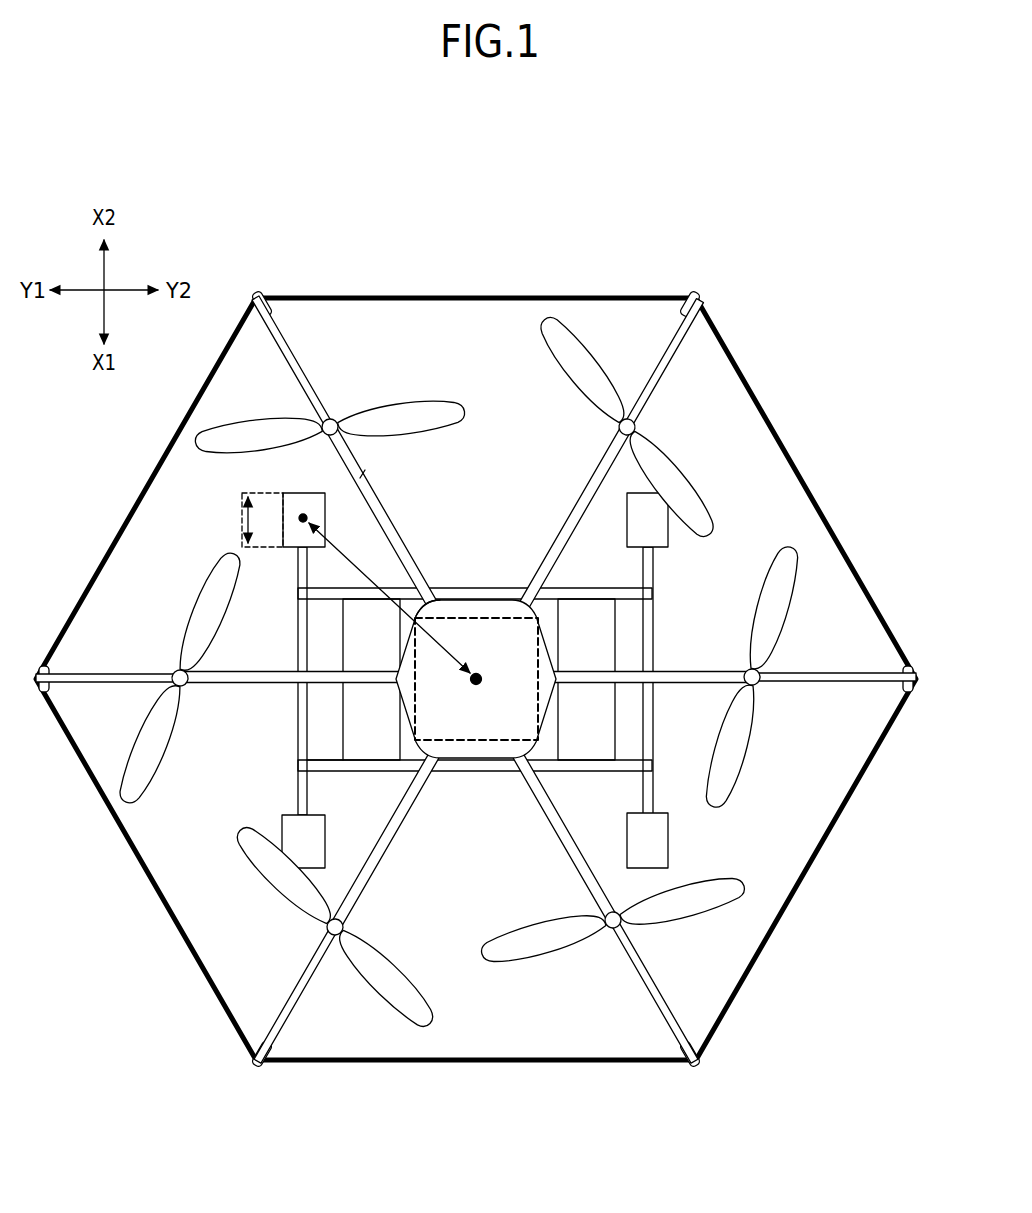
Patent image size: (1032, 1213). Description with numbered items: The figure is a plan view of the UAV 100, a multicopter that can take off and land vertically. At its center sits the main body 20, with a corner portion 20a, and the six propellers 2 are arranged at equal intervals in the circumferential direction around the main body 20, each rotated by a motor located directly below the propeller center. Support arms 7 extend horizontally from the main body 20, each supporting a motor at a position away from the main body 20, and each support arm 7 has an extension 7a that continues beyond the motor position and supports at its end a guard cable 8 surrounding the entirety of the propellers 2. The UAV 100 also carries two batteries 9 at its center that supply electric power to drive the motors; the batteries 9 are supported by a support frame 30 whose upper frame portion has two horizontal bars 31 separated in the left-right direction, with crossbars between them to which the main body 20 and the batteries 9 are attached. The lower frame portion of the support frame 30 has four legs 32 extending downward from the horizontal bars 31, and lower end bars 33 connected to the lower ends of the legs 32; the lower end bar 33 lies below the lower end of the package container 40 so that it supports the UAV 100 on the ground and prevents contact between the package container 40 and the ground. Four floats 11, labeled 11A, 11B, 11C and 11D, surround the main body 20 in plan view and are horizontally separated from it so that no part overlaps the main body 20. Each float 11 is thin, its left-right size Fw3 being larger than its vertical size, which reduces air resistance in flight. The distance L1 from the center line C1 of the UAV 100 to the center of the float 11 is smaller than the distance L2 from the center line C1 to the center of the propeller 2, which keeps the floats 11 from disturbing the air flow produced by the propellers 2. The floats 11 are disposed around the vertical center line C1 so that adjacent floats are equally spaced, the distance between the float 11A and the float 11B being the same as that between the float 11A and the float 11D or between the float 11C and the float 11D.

The UAV 100 is at (622, 228).
The guard cable 8 is at (420, 296).
The support arm 7 is at (577, 505).
The extension 7a is at (294, 352).
The propeller 2 is at (390, 422).
The float 11 is at (491, 660).
The float 11A is at (294, 814).
The float 11B is at (662, 830).
The float 11C is at (657, 543).
The float 11D is at (305, 498).
The size of float in left-right direction Fw3 is at (230, 520).
The distance from center line to center of float L1 is at (352, 556).
The distance from center line to center of propeller L2 is at (364, 470).
The main body 20 is at (492, 597).
The body corner portion 20a is at (452, 608).
The support frame 30 is at (471, 689).
The horizontal bar 31 is at (478, 588).
The leg 32 is at (320, 772).
The lower end bar 33 is at (651, 630).
The battery 9 is at (367, 753).
The package container 40 is at (457, 747).
The center line C1 is at (482, 685).